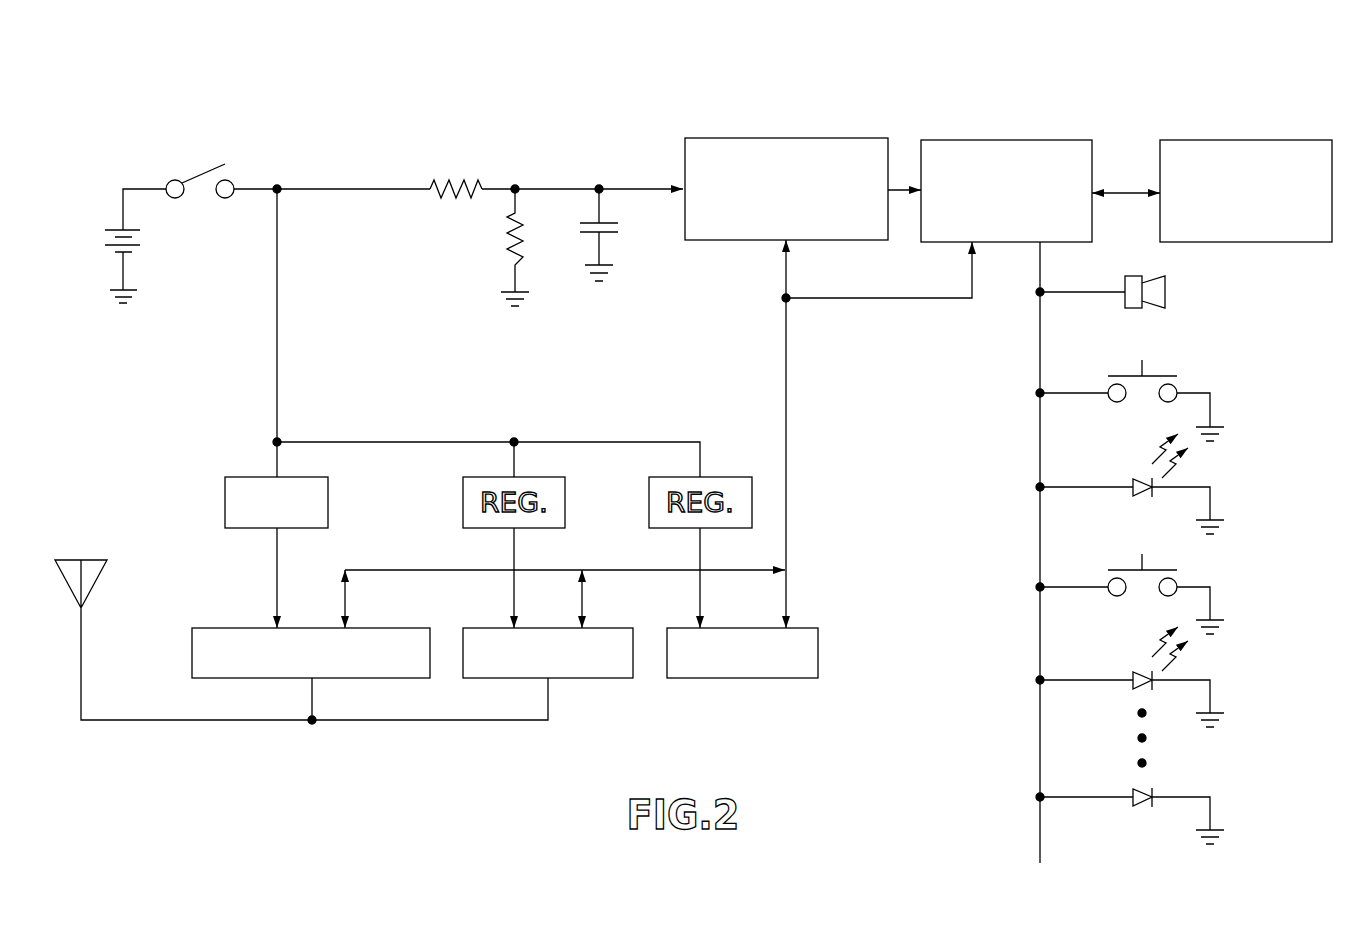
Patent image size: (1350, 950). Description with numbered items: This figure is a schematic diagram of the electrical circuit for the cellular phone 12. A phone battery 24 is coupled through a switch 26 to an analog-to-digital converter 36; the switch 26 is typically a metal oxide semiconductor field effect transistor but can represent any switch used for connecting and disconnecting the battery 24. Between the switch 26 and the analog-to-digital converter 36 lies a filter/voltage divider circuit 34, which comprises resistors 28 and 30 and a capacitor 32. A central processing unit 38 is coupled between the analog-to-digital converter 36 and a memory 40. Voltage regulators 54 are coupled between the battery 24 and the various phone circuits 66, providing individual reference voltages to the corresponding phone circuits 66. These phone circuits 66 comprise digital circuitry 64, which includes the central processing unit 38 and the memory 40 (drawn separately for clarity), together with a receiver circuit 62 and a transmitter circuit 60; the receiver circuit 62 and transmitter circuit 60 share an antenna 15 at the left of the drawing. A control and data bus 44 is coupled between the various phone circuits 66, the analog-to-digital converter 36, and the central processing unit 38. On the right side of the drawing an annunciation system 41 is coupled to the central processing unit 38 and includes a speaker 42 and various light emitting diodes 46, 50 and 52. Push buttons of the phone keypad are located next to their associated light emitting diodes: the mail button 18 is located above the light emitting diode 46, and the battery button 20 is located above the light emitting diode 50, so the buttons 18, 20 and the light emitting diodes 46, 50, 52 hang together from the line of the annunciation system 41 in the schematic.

The cellular phone 12 is at (847, 68).
The antenna 15 is at (90, 560).
The mail button 18 is at (1162, 375).
The battery button 20 is at (1165, 570).
The phone battery 24 is at (113, 229).
The switch 26 is at (205, 172).
The resistor 28 is at (455, 178).
The resistor 30 is at (505, 240).
The capacitor 32 is at (614, 232).
The filter/voltage divider circuit 34 is at (565, 165).
The analog-to-digital converter 36 is at (718, 138).
The central processing unit 38 is at (947, 140).
The memory 40 is at (1187, 140).
The annunciation system 41 is at (1010, 413).
The speaker 42 is at (1168, 292).
The control and data bus 44 is at (788, 400).
The LED 46 is at (1137, 498).
The LED 50 is at (1140, 690).
The LED 52 is at (1140, 805).
The voltage regulators 54 is at (208, 503).
The transmitter circuit 60 is at (230, 628).
The receiver circuit 62 is at (598, 680).
The digital circuitry 64 is at (785, 680).
The phone circuits 66 is at (850, 609).